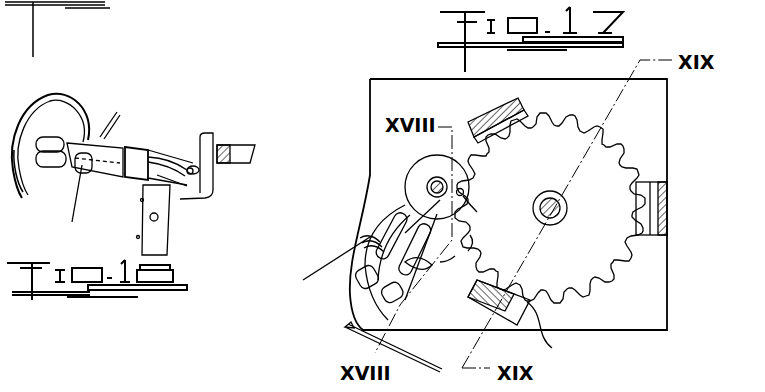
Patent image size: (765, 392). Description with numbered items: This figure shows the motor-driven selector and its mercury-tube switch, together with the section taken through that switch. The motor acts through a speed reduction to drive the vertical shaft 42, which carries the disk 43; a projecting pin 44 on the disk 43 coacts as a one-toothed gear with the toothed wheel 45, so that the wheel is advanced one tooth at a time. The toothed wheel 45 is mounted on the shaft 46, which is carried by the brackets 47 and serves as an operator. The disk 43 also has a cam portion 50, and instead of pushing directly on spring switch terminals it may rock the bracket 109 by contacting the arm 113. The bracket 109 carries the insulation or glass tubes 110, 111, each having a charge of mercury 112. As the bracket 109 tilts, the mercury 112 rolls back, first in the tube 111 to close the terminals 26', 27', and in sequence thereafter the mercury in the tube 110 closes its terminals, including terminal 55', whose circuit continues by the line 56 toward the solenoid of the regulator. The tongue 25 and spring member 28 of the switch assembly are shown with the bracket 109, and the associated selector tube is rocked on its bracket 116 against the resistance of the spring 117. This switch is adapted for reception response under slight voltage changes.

In FIG. 18, the latch tongue 25 is at (118, 120).
In FIG. 17, the latch tongue 25 is at (368, 268).
In FIG. 17, the terminal 26' is at (320, 265).
In FIG. 17, the terminal 27' is at (346, 261).
In FIG. 18, the spring clip 28 is at (117, 122).
In FIG. 17, the spring clip 28 is at (370, 242).
In FIG. 17, the vertical shaft 42 is at (433, 183).
In FIG. 18, the disk 43 is at (243, 145).
In FIG. 17, the disk 43 is at (406, 200).
In FIG. 17, the projecting pin 44 is at (464, 191).
In FIG. 17, the toothed wheel 45 is at (592, 114).
In FIG. 17, the shaft 46 is at (558, 225).
In FIG. 17, the bracket 47 is at (668, 237).
In FIG. 17, the cam portion 50 is at (477, 213).
In FIG. 17, the terminal 55' is at (489, 235).
In FIG. 18, the line 56 is at (23, 197).
In FIG. 17, the line 56 is at (420, 267).
In FIG. 18, the bracket 109 is at (142, 150).
In FIG. 17, the bracket 109 is at (398, 222).
In FIG. 18, the tube 110 is at (128, 188).
In FIG. 17, the tube 110 is at (367, 282).
In FIG. 18, the tube 111 is at (206, 132).
In FIG. 17, the tube 111 is at (408, 294).
In FIG. 18, the mercury charge 112 is at (178, 203).
In FIG. 17, the mercury charge 112 is at (372, 302).
In FIG. 18, the arm 113 is at (214, 130).
In FIG. 17, the arm 113 is at (412, 210).
In FIG. 18, the bracket 116 is at (172, 222).
In FIG. 18, the spring 117 is at (137, 238).